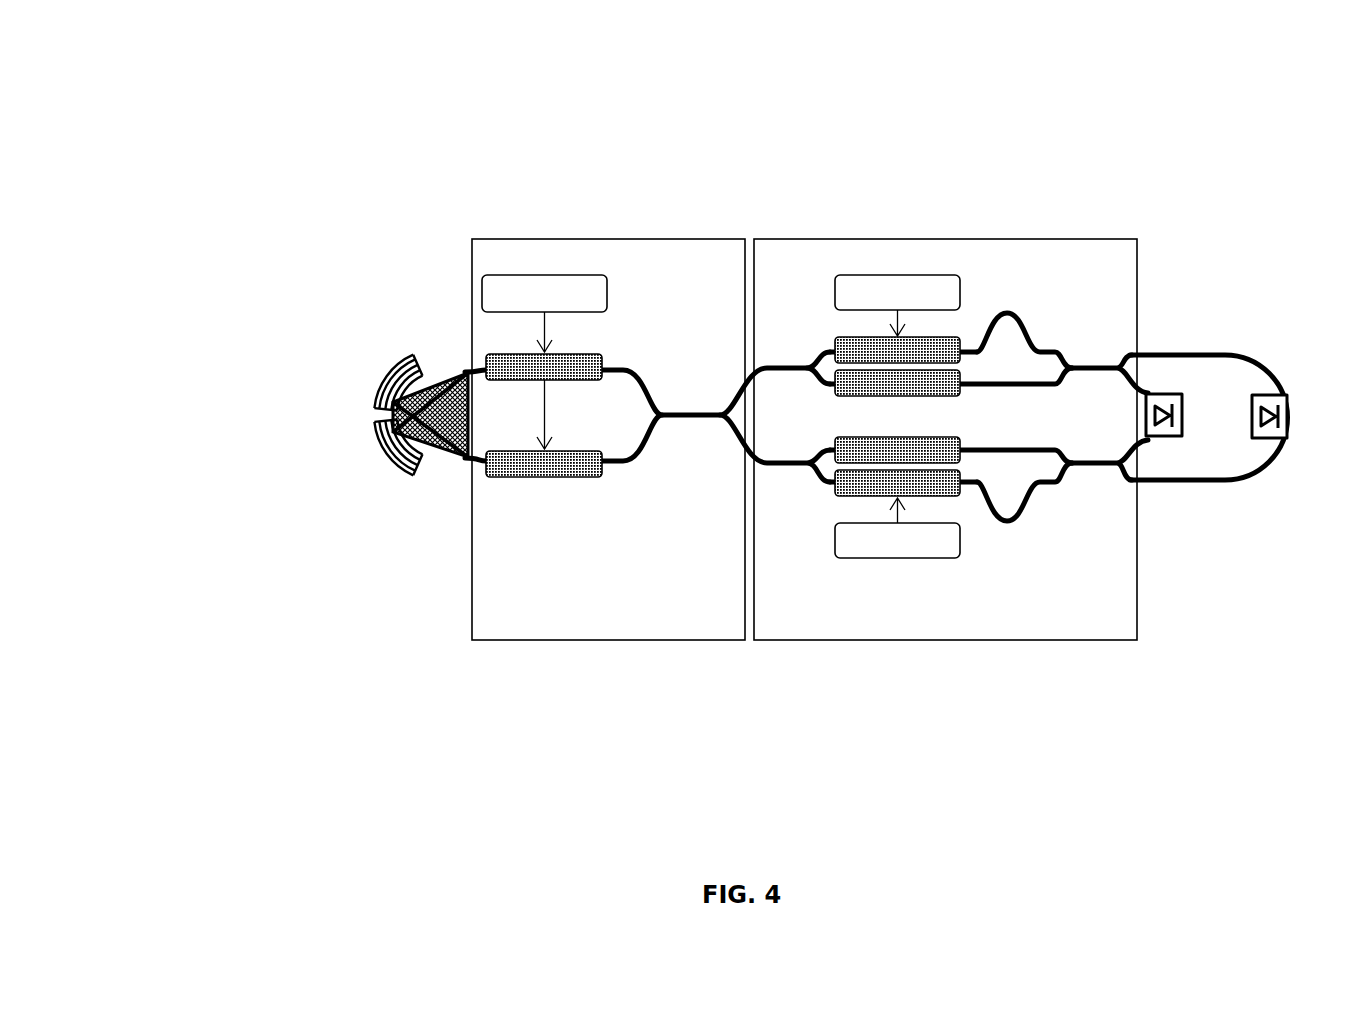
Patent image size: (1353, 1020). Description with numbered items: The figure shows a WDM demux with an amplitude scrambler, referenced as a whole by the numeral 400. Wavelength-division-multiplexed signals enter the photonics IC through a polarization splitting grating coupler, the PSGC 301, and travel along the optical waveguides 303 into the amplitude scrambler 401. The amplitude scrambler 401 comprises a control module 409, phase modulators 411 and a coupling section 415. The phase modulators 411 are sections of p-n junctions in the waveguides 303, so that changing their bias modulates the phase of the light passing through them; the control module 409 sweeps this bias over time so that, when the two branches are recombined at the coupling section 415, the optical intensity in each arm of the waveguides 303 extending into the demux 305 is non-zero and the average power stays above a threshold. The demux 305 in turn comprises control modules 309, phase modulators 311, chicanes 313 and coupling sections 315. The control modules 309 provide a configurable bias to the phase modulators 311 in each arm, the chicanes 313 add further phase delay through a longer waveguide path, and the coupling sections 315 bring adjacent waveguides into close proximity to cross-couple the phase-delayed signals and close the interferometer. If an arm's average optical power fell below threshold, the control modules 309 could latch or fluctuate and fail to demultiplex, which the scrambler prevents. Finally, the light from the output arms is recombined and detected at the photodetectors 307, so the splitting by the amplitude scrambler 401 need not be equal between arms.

The photonic receiver system 400 is at (268, 92).
The amplitude scrambler 401 is at (643, 620).
The demux 305 is at (948, 620).
The polarization splitting grating coupler 301 is at (428, 362).
The control module 409 is at (607, 290).
The phase modulators 411 is at (573, 381).
The coupling section 415 is at (694, 420).
The optical waveguides 303 is at (776, 374).
The control modules 309 is at (960, 290).
The phase modulators 311 is at (900, 397).
The chicanes 313 is at (1033, 321).
The coupling sections 315 is at (1094, 372).
The photodetectors 307 is at (1250, 440).